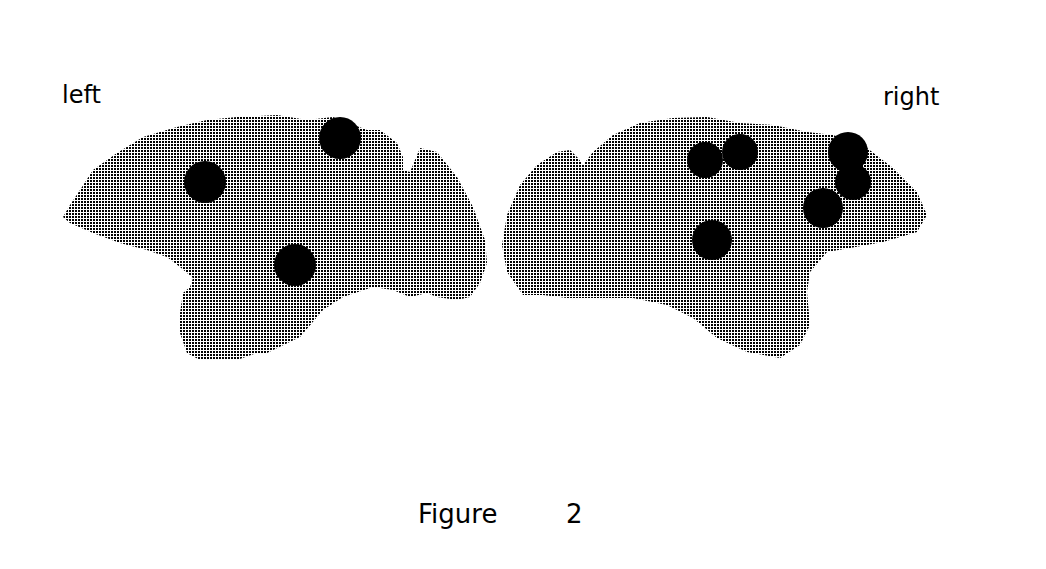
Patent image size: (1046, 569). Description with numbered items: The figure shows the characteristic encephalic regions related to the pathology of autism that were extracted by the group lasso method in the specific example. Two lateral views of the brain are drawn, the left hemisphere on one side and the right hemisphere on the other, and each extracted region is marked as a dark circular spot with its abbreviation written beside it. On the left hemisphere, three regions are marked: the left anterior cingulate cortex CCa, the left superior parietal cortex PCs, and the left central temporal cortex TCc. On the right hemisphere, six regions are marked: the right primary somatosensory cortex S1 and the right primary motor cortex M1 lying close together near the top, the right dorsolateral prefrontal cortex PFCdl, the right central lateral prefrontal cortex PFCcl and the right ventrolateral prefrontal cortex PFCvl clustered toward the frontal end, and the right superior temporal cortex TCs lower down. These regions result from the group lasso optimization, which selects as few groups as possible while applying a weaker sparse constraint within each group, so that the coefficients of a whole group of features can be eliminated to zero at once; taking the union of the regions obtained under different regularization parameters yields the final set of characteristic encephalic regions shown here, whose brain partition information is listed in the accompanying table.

The left anterior cingulate cortex CCa is at (201, 194).
The left superior parietal cortex PCs is at (340, 151).
The left central temporal cortex TCc is at (295, 277).
The right primary somatosensory cortex S1 is at (700, 170).
The right primary motor cortex M1 is at (740, 136).
The right dorsolateral prefrontal cortex PFCdl is at (827, 142).
The right central lateral prefrontal cortex PFCcl is at (874, 192).
The right ventrolateral prefrontal cortex PFCvl is at (805, 220).
The right superior temporal cortex TCs is at (704, 250).